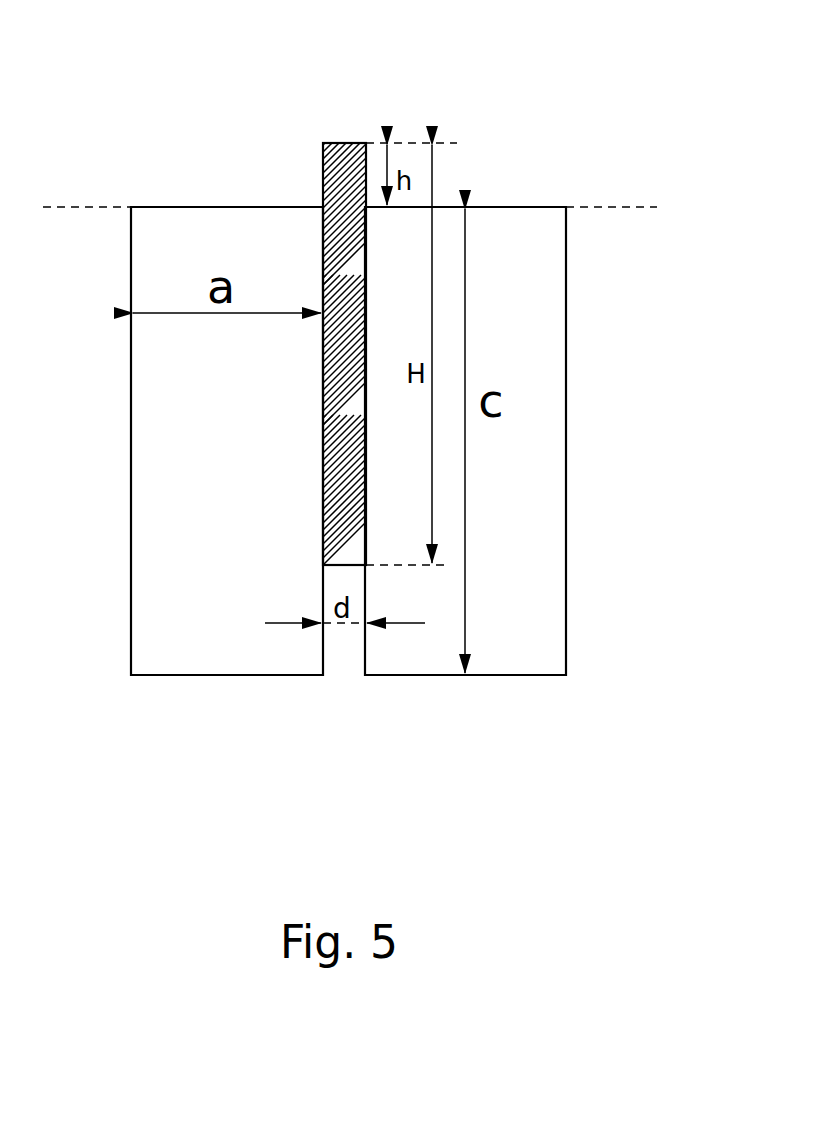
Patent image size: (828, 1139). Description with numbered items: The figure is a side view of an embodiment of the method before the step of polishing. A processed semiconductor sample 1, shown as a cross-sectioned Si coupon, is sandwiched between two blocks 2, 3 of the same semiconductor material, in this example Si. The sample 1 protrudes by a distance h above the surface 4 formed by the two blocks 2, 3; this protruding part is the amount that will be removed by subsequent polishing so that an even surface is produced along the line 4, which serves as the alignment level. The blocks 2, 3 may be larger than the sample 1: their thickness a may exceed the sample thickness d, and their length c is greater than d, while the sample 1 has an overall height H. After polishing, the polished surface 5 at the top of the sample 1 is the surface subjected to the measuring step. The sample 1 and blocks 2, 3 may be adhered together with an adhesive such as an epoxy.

The processed semiconductor sample 1 is at (323, 170).
The block of the same semiconductor material 2 is at (181, 207).
The block of the same semiconductor material 3 is at (496, 207).
The surface formed by the two blocks 4 is at (372, 211).
The polished surface 5 is at (390, 105).